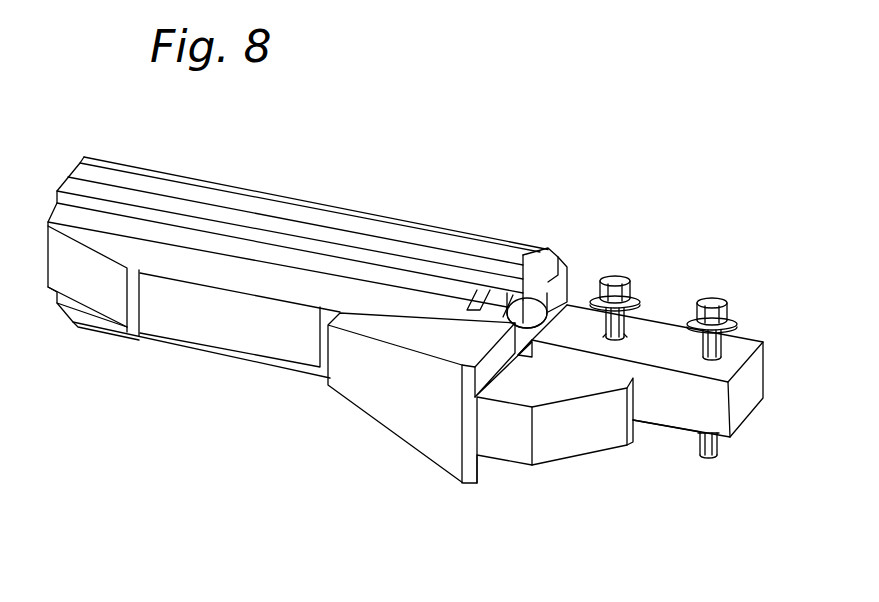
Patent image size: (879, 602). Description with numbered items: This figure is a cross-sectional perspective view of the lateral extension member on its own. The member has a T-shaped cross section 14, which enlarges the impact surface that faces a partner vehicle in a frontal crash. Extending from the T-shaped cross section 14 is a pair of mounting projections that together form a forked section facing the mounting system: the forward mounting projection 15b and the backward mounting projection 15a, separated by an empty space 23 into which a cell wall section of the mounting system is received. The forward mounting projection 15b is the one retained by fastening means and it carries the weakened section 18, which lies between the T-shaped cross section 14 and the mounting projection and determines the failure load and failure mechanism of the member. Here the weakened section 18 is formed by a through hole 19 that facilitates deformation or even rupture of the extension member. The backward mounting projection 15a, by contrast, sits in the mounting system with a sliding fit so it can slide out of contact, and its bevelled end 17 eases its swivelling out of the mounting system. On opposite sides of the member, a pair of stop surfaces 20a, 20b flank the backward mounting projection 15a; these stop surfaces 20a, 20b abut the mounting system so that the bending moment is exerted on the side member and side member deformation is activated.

The T-shaped cross section 14 is at (98, 362).
The backward mounting projection 15a is at (610, 468).
The forward mounting projection 15b is at (757, 327).
The bevelled end 17 is at (545, 448).
The weakened section 18 is at (541, 222).
The through hole 19 is at (521, 327).
The stop surface 20a is at (493, 362).
The stop surface 20b is at (485, 468).
The empty space 23 is at (618, 372).